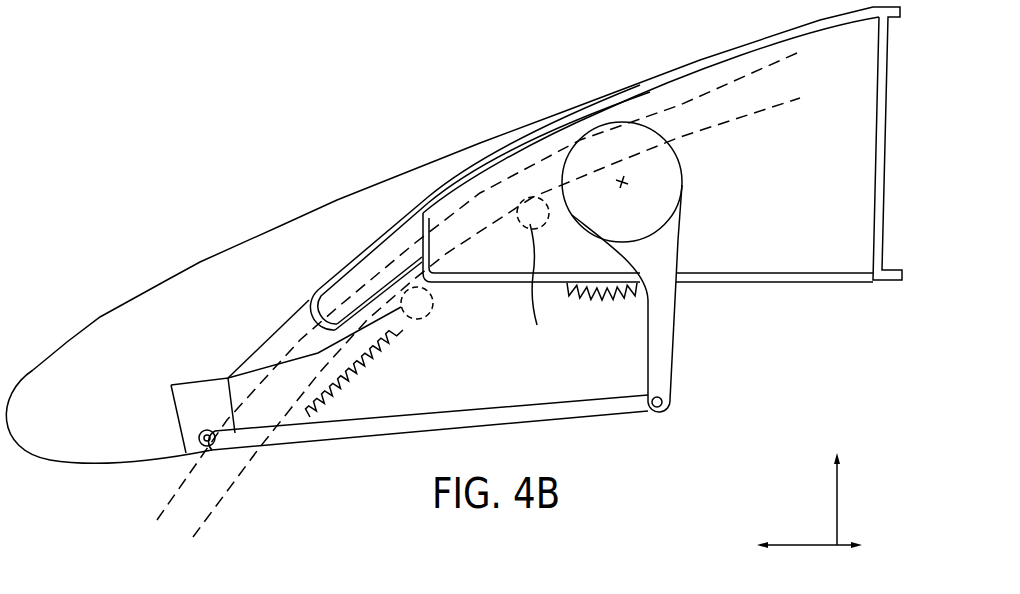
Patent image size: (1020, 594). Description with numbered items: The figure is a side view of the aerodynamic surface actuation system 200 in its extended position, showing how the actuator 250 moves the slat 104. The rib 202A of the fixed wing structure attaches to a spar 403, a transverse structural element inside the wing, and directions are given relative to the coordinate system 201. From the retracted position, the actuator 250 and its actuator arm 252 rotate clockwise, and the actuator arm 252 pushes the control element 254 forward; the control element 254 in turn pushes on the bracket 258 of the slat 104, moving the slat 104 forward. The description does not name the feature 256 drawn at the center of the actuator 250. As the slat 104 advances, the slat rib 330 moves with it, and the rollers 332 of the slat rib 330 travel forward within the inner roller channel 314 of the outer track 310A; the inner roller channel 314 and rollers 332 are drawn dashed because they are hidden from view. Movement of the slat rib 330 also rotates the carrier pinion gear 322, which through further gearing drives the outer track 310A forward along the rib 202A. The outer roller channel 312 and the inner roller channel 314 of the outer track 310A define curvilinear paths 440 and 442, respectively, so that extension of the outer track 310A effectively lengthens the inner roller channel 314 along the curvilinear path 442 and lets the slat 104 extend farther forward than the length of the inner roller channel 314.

The aerodynamic surface actuation system 200 is at (247, 127).
The slat 104 is at (96, 322).
The outer roller channel 312 is at (349, 290).
The outer track 310A is at (394, 226).
The rib 202A is at (803, 283).
The spar 403 is at (884, 232).
The actuator 250 is at (684, 175).
The pivot axis of drive disc 256 is at (622, 180).
The actuator arm 252 is at (667, 340).
The control element 254 is at (365, 430).
The bracket 258 is at (199, 438).
The inner roller channel 314 is at (440, 284).
The rollers 332 is at (427, 302).
The carrier pinion gear 322 is at (601, 295).
The slat rib 330 is at (384, 357).
The curvilinear path 440 is at (170, 499).
The curvilinear path 442 is at (210, 517).
The coordinate system 201 is at (817, 528).